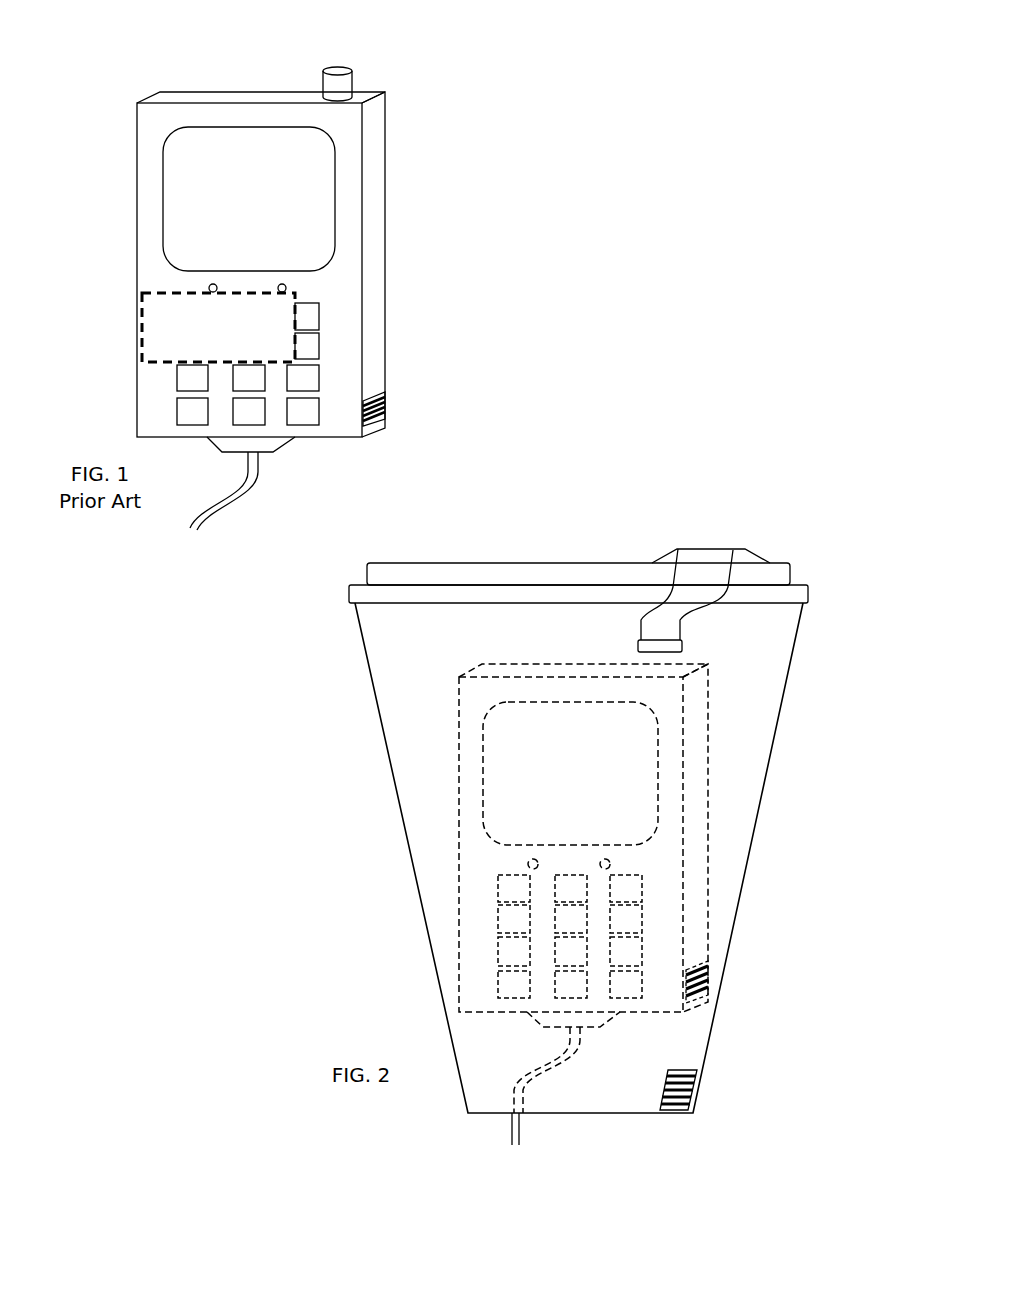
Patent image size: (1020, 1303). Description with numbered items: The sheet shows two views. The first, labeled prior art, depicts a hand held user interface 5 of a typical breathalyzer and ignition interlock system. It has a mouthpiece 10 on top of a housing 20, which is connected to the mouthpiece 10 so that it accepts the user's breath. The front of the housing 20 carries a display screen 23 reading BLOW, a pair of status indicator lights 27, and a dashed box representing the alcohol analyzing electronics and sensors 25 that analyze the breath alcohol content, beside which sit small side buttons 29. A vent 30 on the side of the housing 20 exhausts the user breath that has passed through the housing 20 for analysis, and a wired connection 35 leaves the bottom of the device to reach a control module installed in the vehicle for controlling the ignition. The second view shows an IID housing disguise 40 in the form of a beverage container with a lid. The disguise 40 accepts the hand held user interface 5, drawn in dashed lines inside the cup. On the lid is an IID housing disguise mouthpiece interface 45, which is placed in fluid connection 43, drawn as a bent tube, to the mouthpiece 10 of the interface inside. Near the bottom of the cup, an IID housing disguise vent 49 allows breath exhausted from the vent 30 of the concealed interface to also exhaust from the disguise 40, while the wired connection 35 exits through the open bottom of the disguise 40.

In FIG. 1, the hand held user interface 5 is at (136, 68).
In FIG. 1, the mouthpiece 10 is at (333, 68).
In FIG. 2, the mouthpiece 10 is at (643, 658).
In FIG. 1, the housing 20 is at (375, 160).
In FIG. 1, the display screen 23 is at (328, 223).
In FIG. 1, the alcohol analyzing electronics and sensors 25 is at (142, 298).
In FIG. 1, the status indicator lights 27 is at (286, 286).
In FIG. 1, the side buttons 29 is at (319, 350).
In FIG. 1, the vent 30 is at (385, 400).
In FIG. 2, the vent 30 is at (708, 978).
In FIG. 1, the wired connection 35 is at (258, 452).
In FIG. 2, the wired connection 35 is at (518, 1125).
In FIG. 2, the IID housing disguise 40 is at (803, 495).
In FIG. 2, the fluid connection 43 is at (673, 617).
In FIG. 2, the IID housing disguise mouthpiece interface 45 is at (700, 556).
In FIG. 2, the IID housing disguise vent 49 is at (690, 1097).